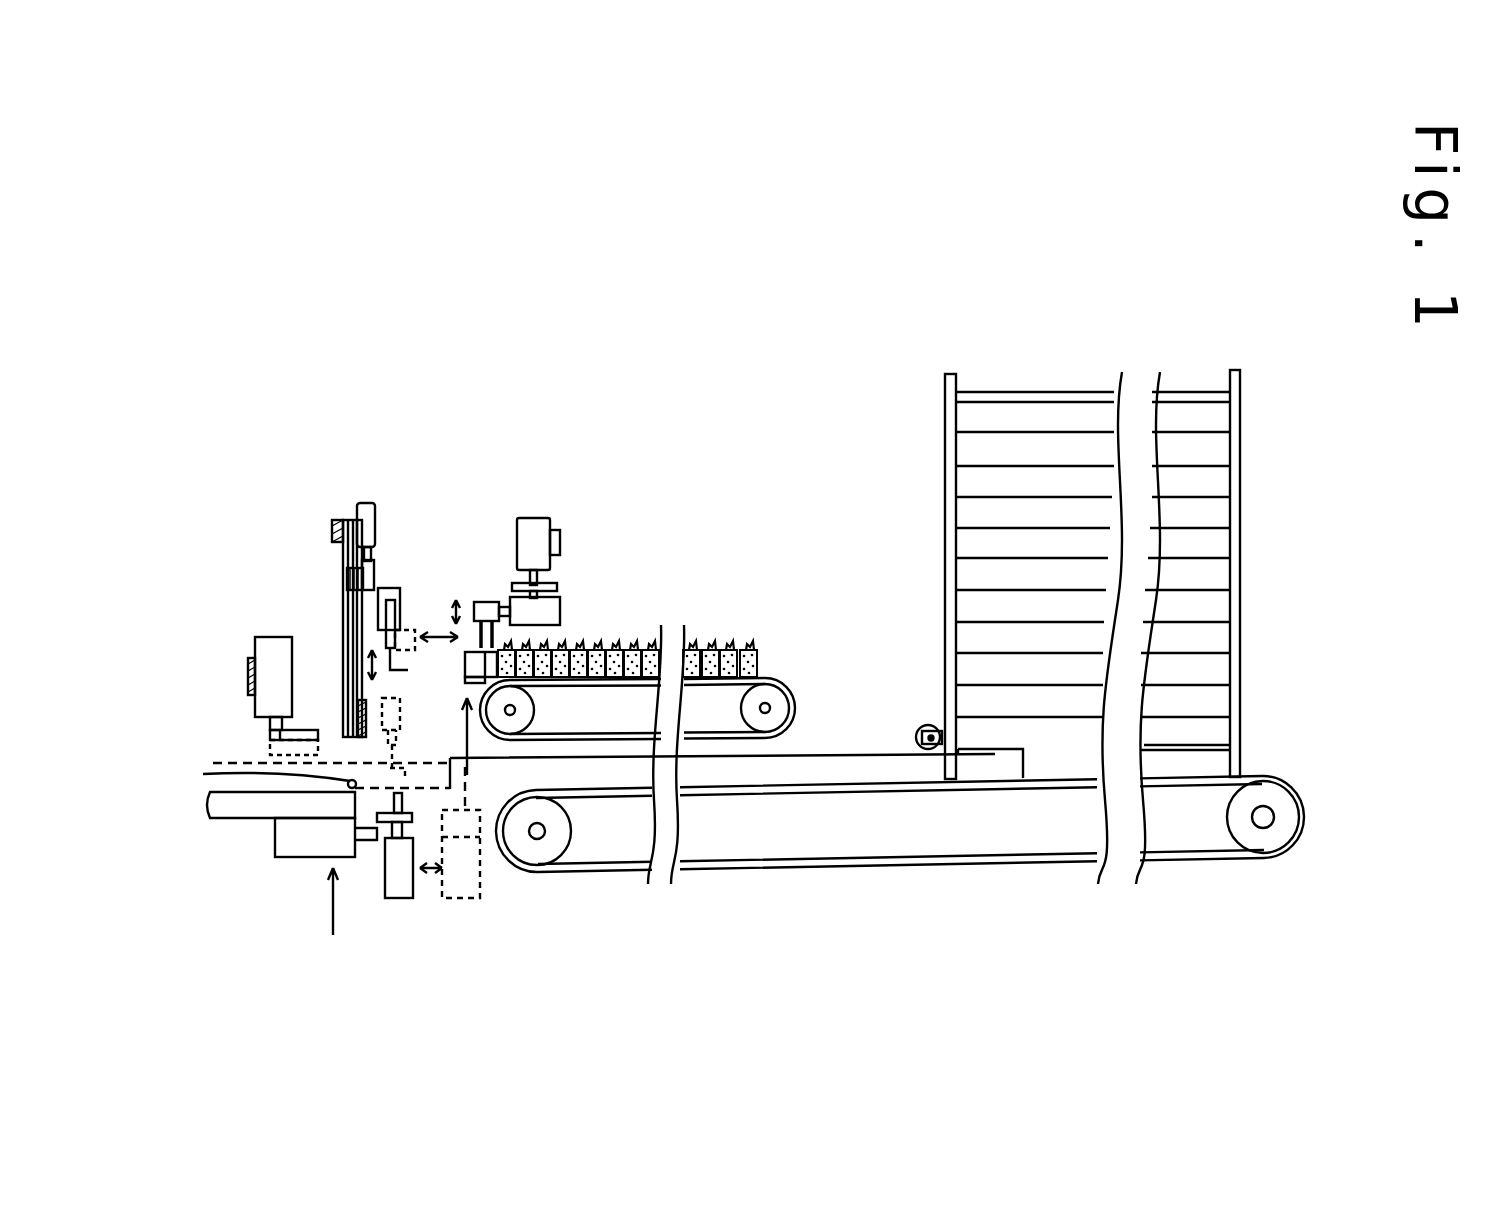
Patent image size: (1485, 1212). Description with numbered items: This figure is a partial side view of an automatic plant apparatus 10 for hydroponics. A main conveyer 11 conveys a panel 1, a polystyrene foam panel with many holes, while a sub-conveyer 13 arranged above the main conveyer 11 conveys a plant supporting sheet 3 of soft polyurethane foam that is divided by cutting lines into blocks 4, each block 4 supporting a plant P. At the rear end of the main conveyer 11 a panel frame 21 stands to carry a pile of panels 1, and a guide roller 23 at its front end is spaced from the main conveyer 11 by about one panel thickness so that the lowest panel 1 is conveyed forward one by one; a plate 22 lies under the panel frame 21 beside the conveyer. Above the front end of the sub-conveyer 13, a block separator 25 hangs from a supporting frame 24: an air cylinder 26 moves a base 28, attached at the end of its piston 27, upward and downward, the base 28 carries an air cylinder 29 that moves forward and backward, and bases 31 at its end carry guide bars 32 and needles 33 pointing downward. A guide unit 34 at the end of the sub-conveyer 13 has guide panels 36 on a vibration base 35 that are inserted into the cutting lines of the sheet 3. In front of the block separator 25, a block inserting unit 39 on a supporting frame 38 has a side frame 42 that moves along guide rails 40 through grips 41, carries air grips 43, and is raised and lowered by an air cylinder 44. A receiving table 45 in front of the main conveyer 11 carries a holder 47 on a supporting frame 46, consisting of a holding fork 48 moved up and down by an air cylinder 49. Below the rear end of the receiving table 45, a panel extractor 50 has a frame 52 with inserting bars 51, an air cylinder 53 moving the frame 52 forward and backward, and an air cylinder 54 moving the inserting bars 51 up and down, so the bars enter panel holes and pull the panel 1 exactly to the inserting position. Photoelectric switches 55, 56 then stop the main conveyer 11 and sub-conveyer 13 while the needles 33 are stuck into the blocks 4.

The panel 1 is at (1056, 415).
The plant supporting sheet 3 is at (645, 640).
The block 4 is at (745, 640).
The automatic plant apparatus 10 is at (731, 508).
The main conveyer 11 is at (776, 870).
The sub-conveyer 13 is at (776, 678).
The panel frame 21 is at (945, 450).
The support plate 22 is at (940, 752).
The guide roller 23 is at (930, 725).
The supporting frame 24 is at (560, 543).
The block separator 25 is at (548, 512).
The air cylinder 26 is at (530, 530).
The piston 27 is at (557, 568).
The base 28 is at (557, 585).
The air cylinder 29 is at (560, 610).
The base 31 is at (479, 600).
The guide bar 32 is at (470, 637).
The needle 33 is at (580, 642).
The guide unit 34 is at (460, 717).
The vibration base 35 is at (468, 681).
The guide panel 36 is at (485, 678).
The supporting frame 38 is at (333, 528).
The block inserting unit 39 is at (379, 488).
The guide rail 40 is at (344, 640).
The grip 41 is at (348, 578).
The side frame 42 is at (373, 565).
The air grip 43 is at (392, 598).
The air cylinder 44 is at (360, 505).
The receiving table 45 is at (230, 835).
The supporting frame 46 is at (250, 686).
The holder 47 is at (258, 640).
The holding fork 48 is at (304, 732).
The air cylinder 49 is at (262, 655).
The panel extractor 50 is at (338, 929).
The inserting bar 51 is at (405, 800).
The frame 52 is at (385, 890).
The air cylinder 53 is at (293, 870).
The air cylinder 54 is at (415, 885).
The photoelectric switch 55 is at (311, 777).
The photoelectric switch 56 is at (548, 680).
The plant P is at (705, 640).